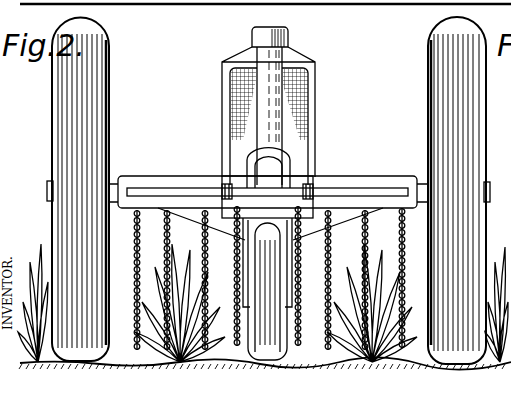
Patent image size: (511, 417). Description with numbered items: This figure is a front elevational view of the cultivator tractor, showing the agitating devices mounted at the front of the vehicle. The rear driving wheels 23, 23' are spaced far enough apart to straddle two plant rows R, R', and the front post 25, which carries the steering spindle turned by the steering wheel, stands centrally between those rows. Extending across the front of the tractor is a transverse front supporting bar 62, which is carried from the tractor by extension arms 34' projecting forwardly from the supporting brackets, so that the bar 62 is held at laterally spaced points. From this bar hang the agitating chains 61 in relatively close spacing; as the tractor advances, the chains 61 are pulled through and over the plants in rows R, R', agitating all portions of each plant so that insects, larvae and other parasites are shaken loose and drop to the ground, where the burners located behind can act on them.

The driving wheel 23 is at (63, 190).
The driving wheel 23' is at (469, 190).
The front post 25 is at (270, 90).
The front supporting bar 62 is at (147, 184).
The extension arm 34' is at (268, 164).
The chain 61 is at (136, 334).
The plant row R is at (145, 303).
The plant row R' is at (393, 303).